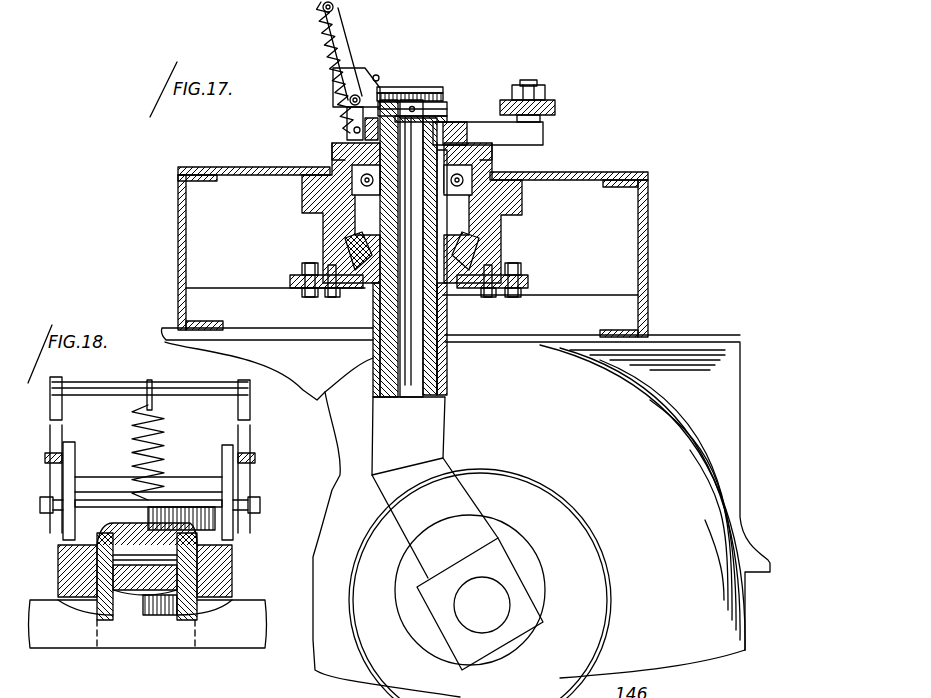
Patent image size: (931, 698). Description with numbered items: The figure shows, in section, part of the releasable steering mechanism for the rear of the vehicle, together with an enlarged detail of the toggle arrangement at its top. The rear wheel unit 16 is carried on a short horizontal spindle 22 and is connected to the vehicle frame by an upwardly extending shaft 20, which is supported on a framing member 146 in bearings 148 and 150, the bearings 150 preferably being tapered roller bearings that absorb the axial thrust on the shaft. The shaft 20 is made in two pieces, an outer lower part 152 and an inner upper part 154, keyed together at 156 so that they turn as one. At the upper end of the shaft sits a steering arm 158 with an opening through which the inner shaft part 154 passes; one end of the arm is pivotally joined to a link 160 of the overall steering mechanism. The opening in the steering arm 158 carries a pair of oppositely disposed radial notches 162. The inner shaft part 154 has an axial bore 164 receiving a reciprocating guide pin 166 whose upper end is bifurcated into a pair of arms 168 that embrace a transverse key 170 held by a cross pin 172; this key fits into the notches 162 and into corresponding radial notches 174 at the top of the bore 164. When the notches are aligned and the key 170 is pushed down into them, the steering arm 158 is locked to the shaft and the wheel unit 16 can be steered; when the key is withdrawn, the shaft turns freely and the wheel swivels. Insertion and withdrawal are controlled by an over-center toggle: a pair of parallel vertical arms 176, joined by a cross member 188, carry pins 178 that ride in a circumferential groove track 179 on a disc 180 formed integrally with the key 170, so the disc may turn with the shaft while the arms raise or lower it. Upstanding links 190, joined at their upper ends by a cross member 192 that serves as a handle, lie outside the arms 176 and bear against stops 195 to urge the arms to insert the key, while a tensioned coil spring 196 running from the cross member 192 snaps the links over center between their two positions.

In FIG. 17, the rear wheel unit 16 is at (647, 400).
In FIG. 17, the shaft 20 is at (435, 422).
In FIG. 17, the spindle 22 is at (486, 584).
In FIG. 17, the framing member 146 is at (661, 240).
In FIG. 17, the bearings 148 is at (332, 182).
In FIG. 17, the bearings 150 is at (350, 249).
In FIG. 17, the outer lower part 152 is at (440, 382).
In FIG. 17, the inner upper part 154 is at (383, 328).
In FIG. 18, the inner upper part 154 is at (100, 616).
In FIG. 17, the key 156 is at (440, 326).
In FIG. 17, the steering arm 158 is at (537, 131).
In FIG. 18, the steering arm 158 is at (227, 590).
In FIG. 17, the link 160 is at (548, 103).
In FIG. 17, the radial notches 162 is at (354, 130).
In FIG. 17, the axial bore 164 is at (408, 366).
In FIG. 17, the guide pin 166 is at (410, 226).
In FIG. 18, the guide pin 166 is at (135, 605).
In FIG. 18, the arms 168 is at (123, 555).
In FIG. 17, the transverse key 170 is at (448, 110).
In FIG. 18, the transverse key 170 is at (153, 568).
In FIG. 18, the cross pin 172 is at (110, 566).
In FIG. 17, the radial notches 174 is at (452, 72).
In FIG. 17, the arms 176 is at (366, 68).
In FIG. 18, the arms 176 is at (62, 470).
In FIG. 18, the pins 178 is at (75, 517).
In FIG. 18, the groove track 179 is at (173, 507).
In FIG. 17, the disc 180 is at (387, 112).
In FIG. 18, the disc 180 is at (163, 517).
In FIG. 18, the cross member 188 is at (97, 483).
In FIG. 17, the links 190 is at (337, 31).
In FIG. 18, the links 190 is at (57, 393).
In FIG. 17, the cross member 192 is at (322, 6).
In FIG. 18, the cross member 192 is at (130, 388).
In FIG. 18, the stops 195 is at (45, 457).
In FIG. 17, the coil spring 196 is at (323, 27).
In FIG. 18, the coil spring 196 is at (160, 438).